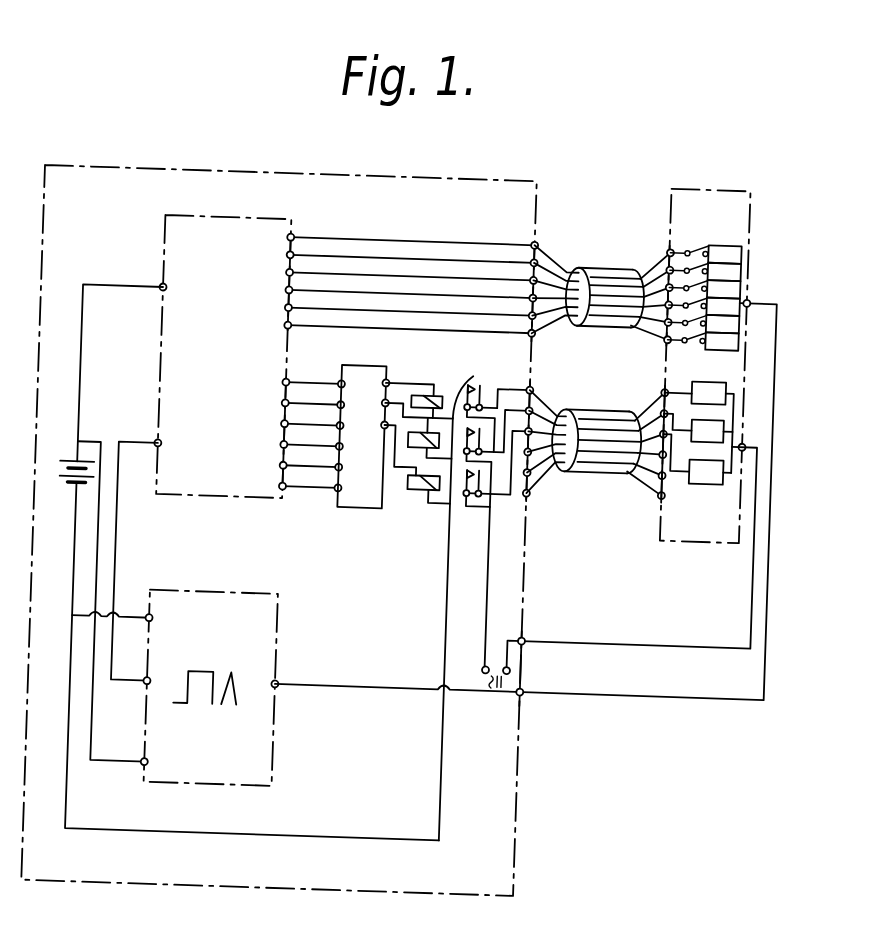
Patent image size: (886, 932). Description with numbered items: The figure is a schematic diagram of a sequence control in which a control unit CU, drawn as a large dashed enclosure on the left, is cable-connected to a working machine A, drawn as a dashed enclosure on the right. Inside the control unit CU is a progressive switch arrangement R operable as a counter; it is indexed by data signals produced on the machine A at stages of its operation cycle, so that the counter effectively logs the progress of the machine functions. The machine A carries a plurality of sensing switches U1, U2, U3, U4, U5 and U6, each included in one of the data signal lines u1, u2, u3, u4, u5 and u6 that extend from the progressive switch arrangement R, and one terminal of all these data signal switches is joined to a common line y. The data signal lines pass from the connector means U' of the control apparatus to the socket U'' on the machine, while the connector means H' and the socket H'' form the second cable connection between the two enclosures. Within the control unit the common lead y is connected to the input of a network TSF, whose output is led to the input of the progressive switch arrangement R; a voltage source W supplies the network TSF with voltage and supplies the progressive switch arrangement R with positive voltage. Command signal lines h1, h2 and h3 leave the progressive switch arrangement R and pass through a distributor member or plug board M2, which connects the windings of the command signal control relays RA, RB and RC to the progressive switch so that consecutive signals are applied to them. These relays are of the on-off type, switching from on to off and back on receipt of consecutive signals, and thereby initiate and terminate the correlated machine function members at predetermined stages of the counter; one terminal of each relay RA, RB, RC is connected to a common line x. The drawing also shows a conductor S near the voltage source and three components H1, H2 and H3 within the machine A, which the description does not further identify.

The control unit CU is at (304, 168).
The progressive switch arrangement R is at (227, 213).
The data signal line u1 is at (413, 234).
The data signal line u2 is at (413, 252).
The data signal line u3 is at (412, 269).
The data signal line u4 is at (411, 287).
The data signal line u5 is at (411, 304).
The data signal line u6 is at (410, 322).
The distributor member or plug board M2 is at (368, 353).
The voltage source W is at (70, 474).
The supply line S is at (129, 539).
The network TSF is at (293, 626).
The common line x is at (461, 613).
The common line y is at (650, 676).
The command signal line h1 is at (401, 372).
The command signal line h2 is at (414, 387).
The command signal line h3 is at (404, 471).
The command signal control relay RA is at (442, 383).
The command signal control relay RB is at (487, 522).
The command signal control relay RC is at (428, 479).
The connector means H' is at (545, 434).
The socket H'' is at (647, 438).
The connector means U' is at (556, 278).
The socket U'' is at (669, 285).
The working machine A is at (716, 168).
The sensing switch U1 is at (725, 254).
The sensing switch U2 is at (725, 272).
The sensing switch U3 is at (724, 289).
The sensing switch U4 is at (723, 307).
The sensing switch U5 is at (723, 324).
The sensing switch U6 is at (722, 341).
The actuator H1 is at (698, 427).
The actuator H2 is at (698, 429).
The actuator H3 is at (697, 459).